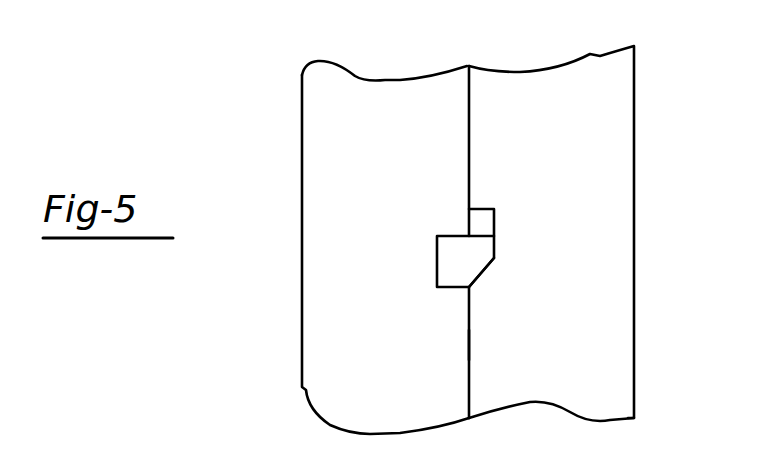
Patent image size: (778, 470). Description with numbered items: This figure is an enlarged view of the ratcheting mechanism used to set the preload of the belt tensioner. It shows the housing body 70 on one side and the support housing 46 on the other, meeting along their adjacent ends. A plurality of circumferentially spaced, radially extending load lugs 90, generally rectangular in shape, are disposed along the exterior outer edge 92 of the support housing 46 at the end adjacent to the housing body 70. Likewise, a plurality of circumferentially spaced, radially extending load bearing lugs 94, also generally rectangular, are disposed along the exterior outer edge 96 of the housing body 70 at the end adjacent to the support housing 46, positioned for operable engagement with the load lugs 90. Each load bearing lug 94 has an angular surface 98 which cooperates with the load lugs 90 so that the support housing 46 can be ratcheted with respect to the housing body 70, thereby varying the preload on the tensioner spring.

The housing body 70 is at (313, 96).
The support housing 46 is at (627, 78).
The exterior outer edge 96 is at (465, 100).
The load lugs 90 is at (494, 214).
The load bearing lugs 94 is at (446, 248).
The angular surface 98 is at (490, 272).
The exterior outer edge 92 is at (470, 341).